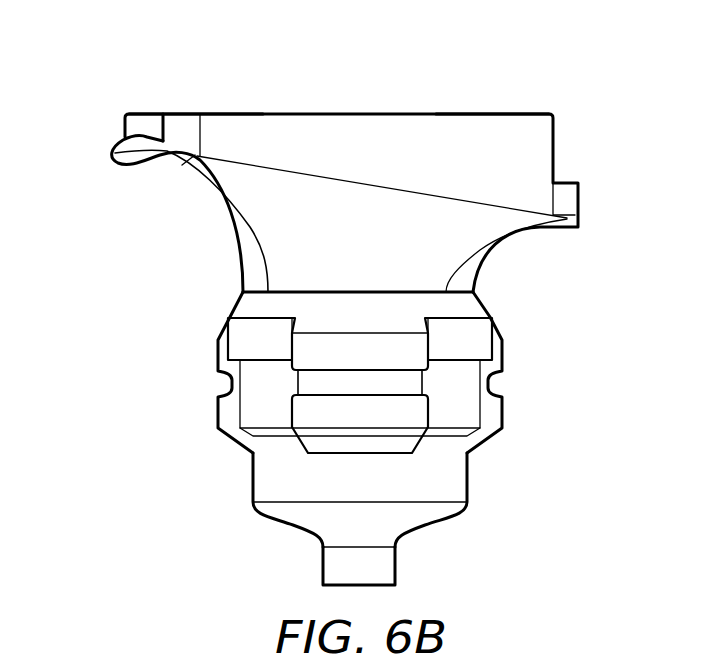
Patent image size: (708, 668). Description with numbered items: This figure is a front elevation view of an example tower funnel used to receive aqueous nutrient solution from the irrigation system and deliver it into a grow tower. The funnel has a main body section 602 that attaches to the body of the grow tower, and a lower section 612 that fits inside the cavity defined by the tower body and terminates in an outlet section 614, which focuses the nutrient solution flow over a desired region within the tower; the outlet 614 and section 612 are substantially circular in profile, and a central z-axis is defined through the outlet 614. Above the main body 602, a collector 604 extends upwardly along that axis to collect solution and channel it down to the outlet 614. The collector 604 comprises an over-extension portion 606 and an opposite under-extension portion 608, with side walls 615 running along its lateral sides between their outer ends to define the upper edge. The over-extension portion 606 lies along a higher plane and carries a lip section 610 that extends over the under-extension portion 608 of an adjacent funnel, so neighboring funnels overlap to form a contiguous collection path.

The main body section 602 is at (465, 417).
The collector structure 604 is at (560, 166).
The over-extension portion 606 is at (263, 108).
The under-extension portion 608 is at (576, 108).
The lip section 610 is at (125, 147).
The section 612 is at (447, 483).
The outlet section 614 is at (380, 562).
The side walls 615 is at (379, 157).